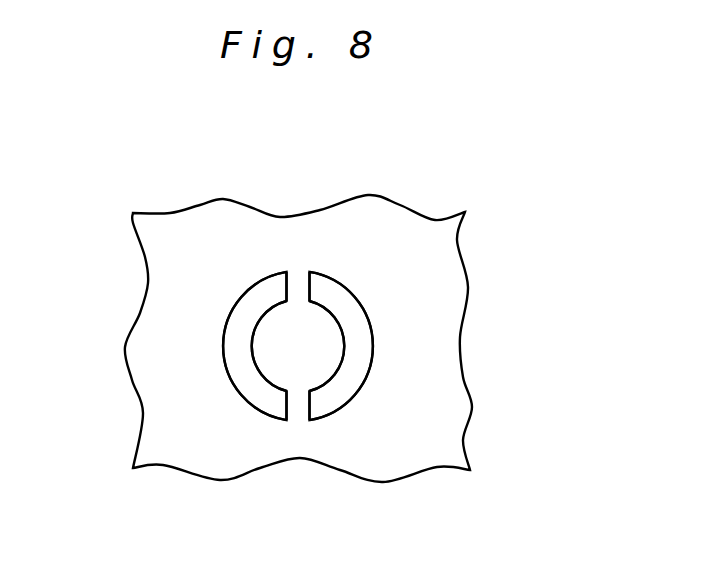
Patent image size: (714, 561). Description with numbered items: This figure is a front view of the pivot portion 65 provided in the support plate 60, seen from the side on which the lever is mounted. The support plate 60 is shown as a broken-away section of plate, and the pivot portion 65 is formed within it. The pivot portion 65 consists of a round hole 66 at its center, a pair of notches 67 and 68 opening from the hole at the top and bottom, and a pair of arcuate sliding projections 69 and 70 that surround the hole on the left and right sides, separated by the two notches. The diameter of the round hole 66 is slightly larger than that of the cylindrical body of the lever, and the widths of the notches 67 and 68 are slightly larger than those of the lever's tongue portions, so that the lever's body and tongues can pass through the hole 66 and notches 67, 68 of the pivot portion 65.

The support plate 60 is at (409, 208).
The pivot portion 65 is at (378, 377).
The round hole 66 is at (268, 363).
The notch 67 is at (291, 286).
The notch 68 is at (303, 407).
The arcuate sliding projection 69 is at (240, 322).
The arcuate sliding projection 70 is at (357, 326).